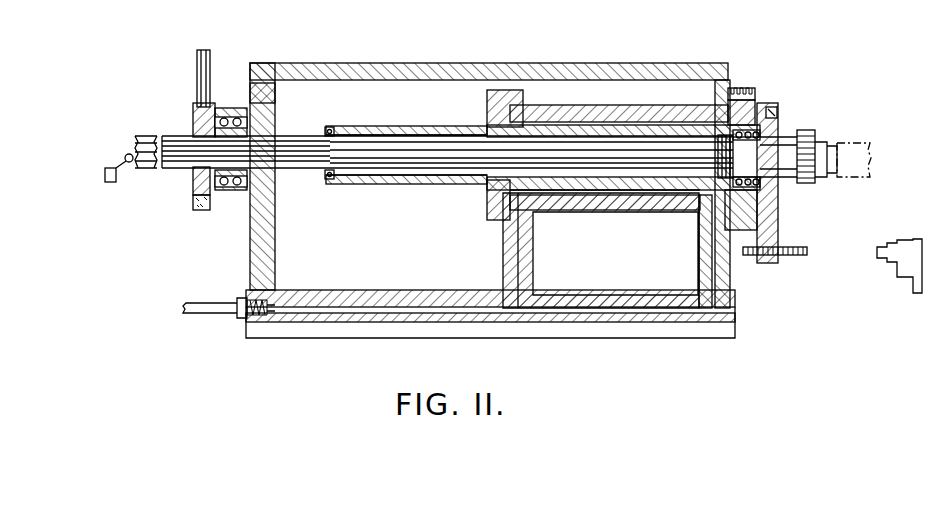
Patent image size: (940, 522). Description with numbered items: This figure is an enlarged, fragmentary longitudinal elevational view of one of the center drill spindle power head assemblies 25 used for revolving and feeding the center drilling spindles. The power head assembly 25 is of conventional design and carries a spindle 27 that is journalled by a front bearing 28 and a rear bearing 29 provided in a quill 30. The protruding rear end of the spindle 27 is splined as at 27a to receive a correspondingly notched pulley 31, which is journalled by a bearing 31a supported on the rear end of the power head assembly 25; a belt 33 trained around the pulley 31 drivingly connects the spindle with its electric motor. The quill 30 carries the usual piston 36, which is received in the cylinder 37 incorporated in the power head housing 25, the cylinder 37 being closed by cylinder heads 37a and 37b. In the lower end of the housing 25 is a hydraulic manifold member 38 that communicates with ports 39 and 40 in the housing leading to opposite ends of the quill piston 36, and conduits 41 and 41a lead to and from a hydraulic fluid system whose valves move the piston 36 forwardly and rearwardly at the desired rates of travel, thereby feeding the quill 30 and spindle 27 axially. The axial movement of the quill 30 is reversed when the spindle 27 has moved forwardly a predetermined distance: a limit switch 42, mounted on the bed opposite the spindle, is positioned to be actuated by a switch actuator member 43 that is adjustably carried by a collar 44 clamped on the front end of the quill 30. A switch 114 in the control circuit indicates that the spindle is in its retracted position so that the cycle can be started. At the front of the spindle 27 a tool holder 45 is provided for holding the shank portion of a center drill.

The power head assembly 25 is at (695, 66).
The spindle 27 is at (772, 133).
The splined rear end 27a is at (185, 160).
The front bearing 28 is at (331, 126).
The rear bearing 29 is at (763, 202).
The quill 30 is at (385, 184).
The pulley 31 is at (193, 120).
The bearing 31a is at (224, 191).
The belt 33 is at (197, 73).
The piston 36 is at (550, 120).
The cylinder 37 is at (612, 122).
The cylinder head 37a is at (487, 205).
The cylinder head 37b is at (742, 98).
The hydraulic manifold member 38 is at (607, 325).
The port 39 is at (712, 280).
The port 40 is at (520, 248).
The conduit 41 is at (210, 305).
The conduit 41a is at (192, 318).
The limit switch 42 is at (908, 248).
The switch actuator member 43 is at (790, 255).
The collar 44 is at (778, 232).
The tool holder 45 is at (810, 148).
The switch 114 is at (110, 183).